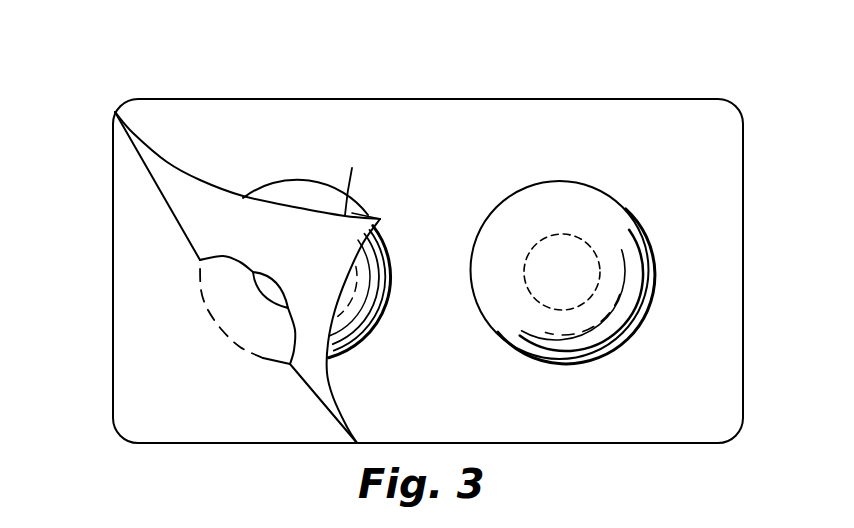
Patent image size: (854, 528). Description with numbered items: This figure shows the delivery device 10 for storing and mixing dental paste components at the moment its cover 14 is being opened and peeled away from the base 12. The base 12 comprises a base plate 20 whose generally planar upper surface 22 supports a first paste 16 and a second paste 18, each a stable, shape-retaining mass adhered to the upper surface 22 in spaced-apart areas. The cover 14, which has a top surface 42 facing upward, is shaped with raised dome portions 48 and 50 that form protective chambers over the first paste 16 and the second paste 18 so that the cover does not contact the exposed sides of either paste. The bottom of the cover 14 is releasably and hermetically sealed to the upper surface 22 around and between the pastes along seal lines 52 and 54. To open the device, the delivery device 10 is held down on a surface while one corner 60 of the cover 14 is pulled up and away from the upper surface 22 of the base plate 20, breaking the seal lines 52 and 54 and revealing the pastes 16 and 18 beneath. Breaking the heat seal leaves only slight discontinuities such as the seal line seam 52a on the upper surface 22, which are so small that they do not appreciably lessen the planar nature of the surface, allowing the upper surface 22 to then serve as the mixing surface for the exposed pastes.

The delivery device 10 is at (619, 66).
The base 12 is at (108, 145).
The cover 14 is at (301, 96).
The first paste 16 is at (250, 295).
The second paste 18 is at (580, 238).
The base plate 20 is at (215, 428).
The upper surface 22 is at (164, 272).
The top surface 42 is at (430, 141).
The dome portion 48 is at (282, 190).
The dome portion 50 is at (527, 195).
The seal line 52 is at (365, 333).
The seal line seam 52a is at (262, 368).
The seal line 54 is at (620, 345).
The corner 60 is at (354, 180).